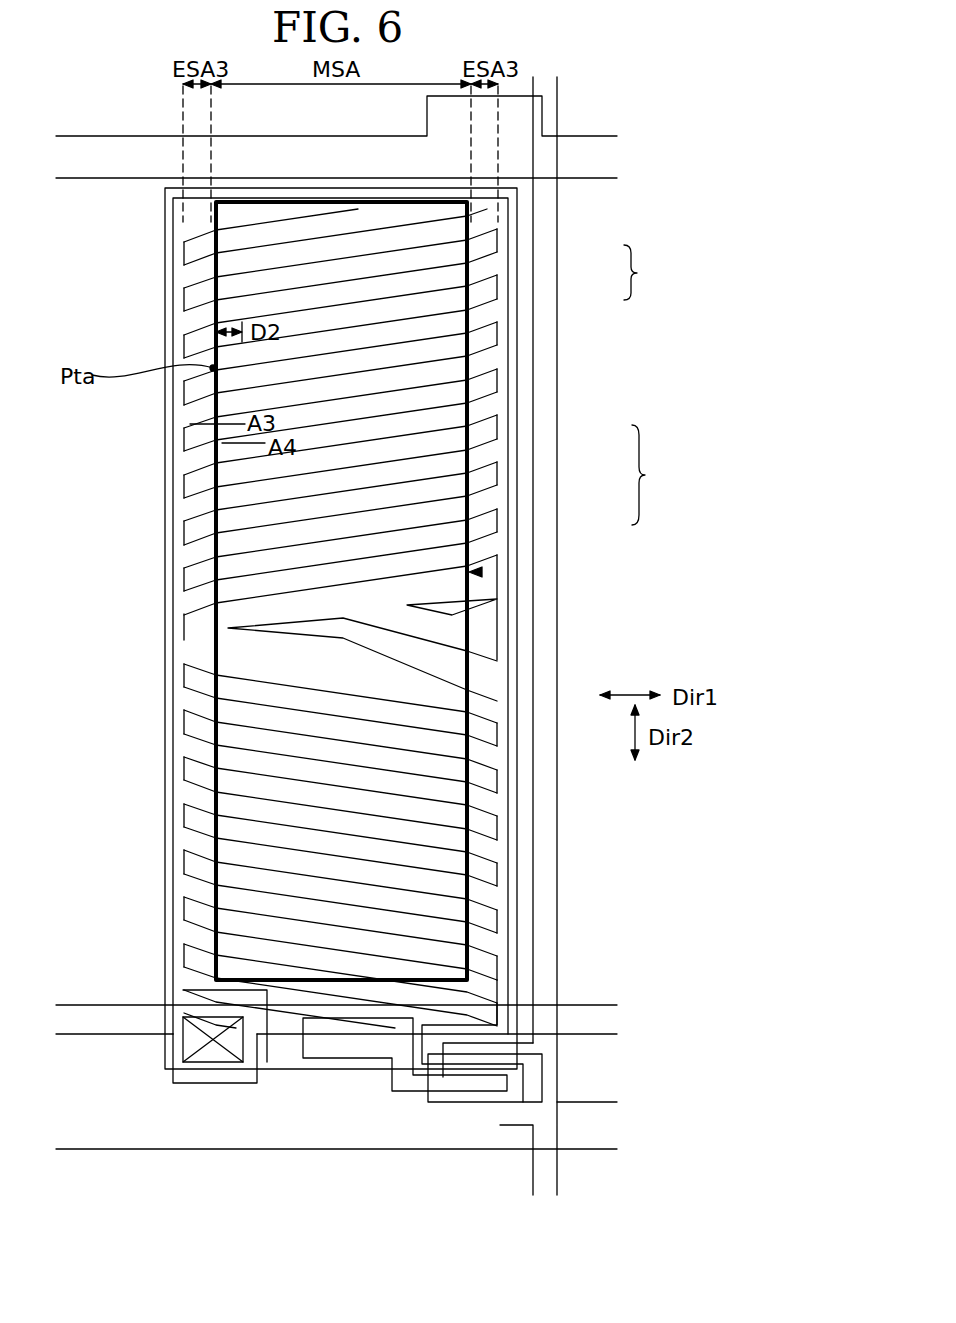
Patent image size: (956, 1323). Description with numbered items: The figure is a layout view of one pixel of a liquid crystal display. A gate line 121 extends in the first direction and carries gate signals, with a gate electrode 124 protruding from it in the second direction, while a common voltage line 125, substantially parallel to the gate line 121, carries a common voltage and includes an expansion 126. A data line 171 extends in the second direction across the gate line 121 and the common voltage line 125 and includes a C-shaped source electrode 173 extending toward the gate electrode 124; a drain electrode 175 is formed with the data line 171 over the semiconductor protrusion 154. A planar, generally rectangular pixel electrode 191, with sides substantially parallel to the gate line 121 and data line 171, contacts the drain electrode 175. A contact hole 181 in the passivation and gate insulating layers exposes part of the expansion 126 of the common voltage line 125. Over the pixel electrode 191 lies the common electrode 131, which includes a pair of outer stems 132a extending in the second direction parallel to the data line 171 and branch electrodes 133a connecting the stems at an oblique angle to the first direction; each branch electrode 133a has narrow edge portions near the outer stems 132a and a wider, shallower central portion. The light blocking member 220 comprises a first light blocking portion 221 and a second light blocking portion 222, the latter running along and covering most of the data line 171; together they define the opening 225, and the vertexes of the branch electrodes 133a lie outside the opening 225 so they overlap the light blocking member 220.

The gate line 121 is at (560, 1100).
The gate electrode 124 is at (543, 1090).
The common voltage line 125 is at (598, 1005).
The expansion 126 is at (237, 1062).
The common electrode 131 is at (659, 475).
The outer stem 132a is at (188, 490).
The branch electrode 133a is at (433, 452).
The semiconductor protrusion 154 is at (447, 1095).
The data line 171 is at (540, 380).
The source electrode 173 is at (500, 1125).
The drain electrode 175 is at (472, 1092).
The contact hole 181 is at (207, 1062).
The pixel electrode 191 is at (168, 895).
The light blocking member 220 is at (649, 272).
The first light blocking portion 221 is at (370, 203).
The second light blocking portion 222 is at (440, 296).
The opening 225 is at (482, 572).